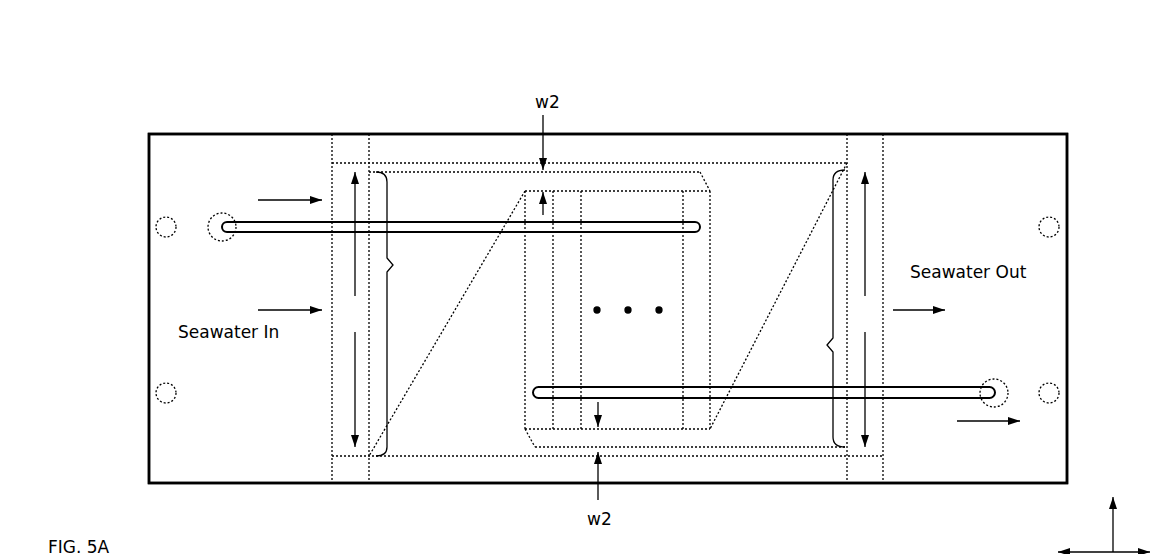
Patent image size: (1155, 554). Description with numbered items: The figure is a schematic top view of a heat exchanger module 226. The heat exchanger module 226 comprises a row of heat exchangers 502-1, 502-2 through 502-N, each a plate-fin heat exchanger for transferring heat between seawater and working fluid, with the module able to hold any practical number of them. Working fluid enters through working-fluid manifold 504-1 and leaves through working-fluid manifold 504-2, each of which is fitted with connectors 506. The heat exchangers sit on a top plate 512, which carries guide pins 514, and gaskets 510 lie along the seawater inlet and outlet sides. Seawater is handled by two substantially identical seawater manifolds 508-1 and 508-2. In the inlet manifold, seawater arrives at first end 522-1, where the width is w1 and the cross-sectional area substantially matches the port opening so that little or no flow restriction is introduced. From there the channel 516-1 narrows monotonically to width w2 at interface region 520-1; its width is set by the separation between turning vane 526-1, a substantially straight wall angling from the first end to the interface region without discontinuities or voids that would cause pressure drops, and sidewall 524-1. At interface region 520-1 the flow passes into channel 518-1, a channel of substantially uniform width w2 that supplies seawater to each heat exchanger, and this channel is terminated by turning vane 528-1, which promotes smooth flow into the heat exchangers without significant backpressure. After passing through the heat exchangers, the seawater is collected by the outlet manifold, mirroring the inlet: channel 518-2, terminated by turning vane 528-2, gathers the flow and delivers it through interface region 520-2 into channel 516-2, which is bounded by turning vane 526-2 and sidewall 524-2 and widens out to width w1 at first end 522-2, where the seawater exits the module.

The heat exchanger module 226 is at (165, 73).
The heat exchanger 502-1 is at (538, 257).
The heat exchanger 502-2 is at (565, 282).
The heat exchanger 502-N is at (690, 355).
The working-fluid manifold 504-1 is at (303, 232).
The working-fluid manifold 504-2 is at (922, 385).
The connector 506 is at (222, 242).
The seawater manifold 508-1 is at (452, 328).
The seawater manifold 508-2 is at (773, 278).
The gasket 510 is at (350, 150).
The top plate 512 is at (608, 308).
The guide pin 514 is at (166, 217).
The channel 516-1 is at (325, 185).
The channel 516-2 is at (887, 443).
The channel 518-1 is at (590, 183).
The channel 518-2 is at (633, 440).
The interface region 520-1 is at (522, 180).
The interface region 520-2 is at (712, 438).
The first end 522-1 is at (401, 314).
The first end 522-2 is at (823, 308).
The sidewall 524-1 is at (447, 172).
The sidewall 524-2 is at (762, 447).
The turning vane 526-1 is at (415, 378).
The turning vane 526-2 is at (805, 240).
The turning vane 528-1 is at (707, 182).
The turning vane 528-2 is at (527, 440).